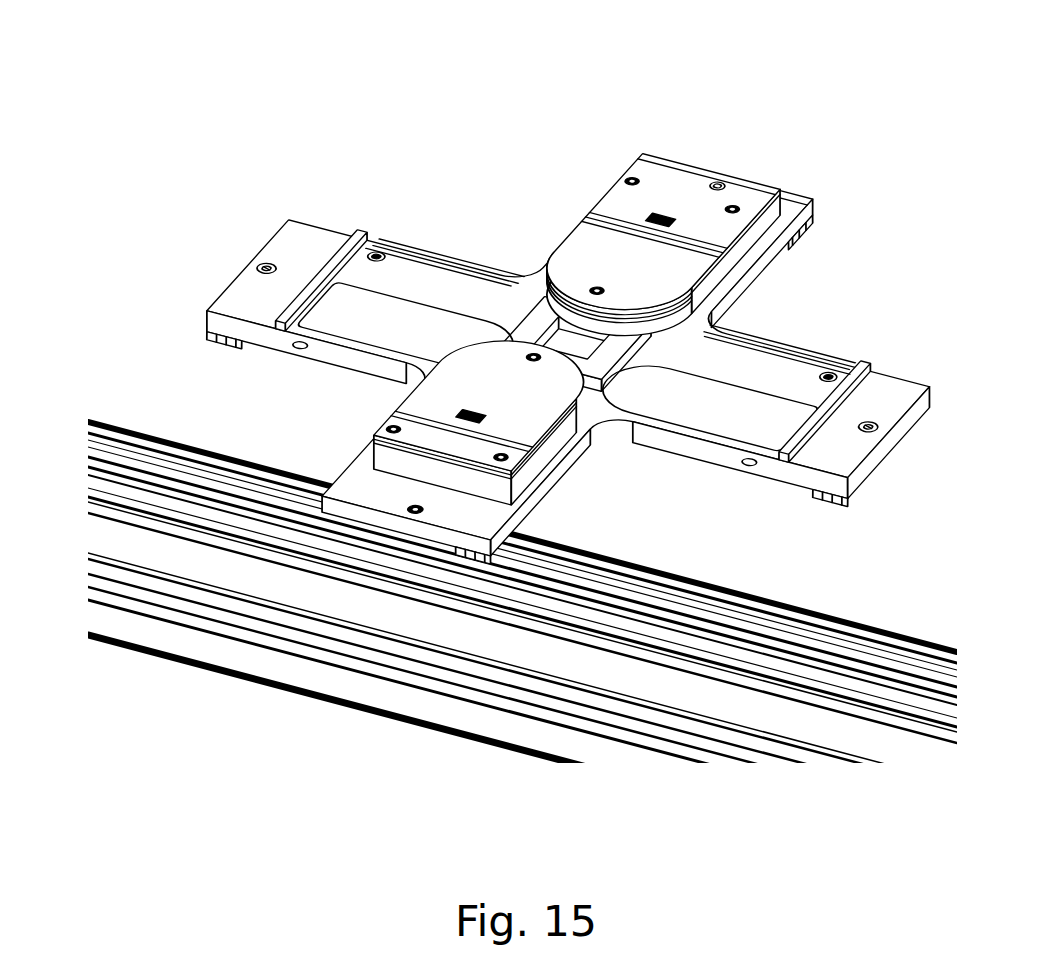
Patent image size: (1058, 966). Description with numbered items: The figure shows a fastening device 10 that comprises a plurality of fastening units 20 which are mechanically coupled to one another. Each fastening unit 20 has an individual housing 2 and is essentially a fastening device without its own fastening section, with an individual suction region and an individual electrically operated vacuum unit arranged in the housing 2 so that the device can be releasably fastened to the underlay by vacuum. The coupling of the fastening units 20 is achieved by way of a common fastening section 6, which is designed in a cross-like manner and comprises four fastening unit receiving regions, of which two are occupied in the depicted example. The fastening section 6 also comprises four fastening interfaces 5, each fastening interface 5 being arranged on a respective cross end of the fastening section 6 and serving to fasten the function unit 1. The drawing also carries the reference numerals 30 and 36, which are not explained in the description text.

The rail profile 1 is at (156, 634).
The sensor module 2 is at (522, 307).
The sensor module 20 is at (588, 243).
The foot clip 5 is at (798, 216).
The guide rail 6 is at (788, 352).
The carrier frame 10 is at (570, 349).
The sensor assembly 30 is at (551, 317).
The hole 36 is at (376, 252).